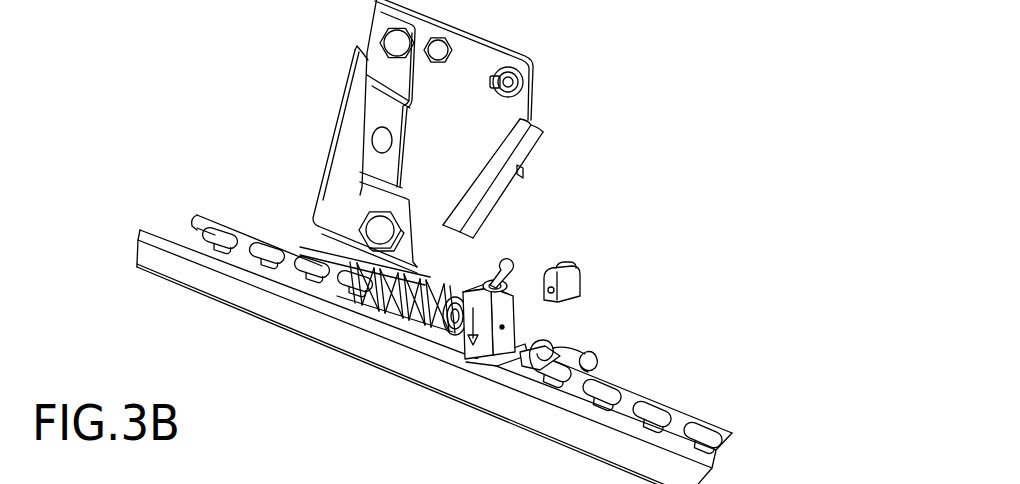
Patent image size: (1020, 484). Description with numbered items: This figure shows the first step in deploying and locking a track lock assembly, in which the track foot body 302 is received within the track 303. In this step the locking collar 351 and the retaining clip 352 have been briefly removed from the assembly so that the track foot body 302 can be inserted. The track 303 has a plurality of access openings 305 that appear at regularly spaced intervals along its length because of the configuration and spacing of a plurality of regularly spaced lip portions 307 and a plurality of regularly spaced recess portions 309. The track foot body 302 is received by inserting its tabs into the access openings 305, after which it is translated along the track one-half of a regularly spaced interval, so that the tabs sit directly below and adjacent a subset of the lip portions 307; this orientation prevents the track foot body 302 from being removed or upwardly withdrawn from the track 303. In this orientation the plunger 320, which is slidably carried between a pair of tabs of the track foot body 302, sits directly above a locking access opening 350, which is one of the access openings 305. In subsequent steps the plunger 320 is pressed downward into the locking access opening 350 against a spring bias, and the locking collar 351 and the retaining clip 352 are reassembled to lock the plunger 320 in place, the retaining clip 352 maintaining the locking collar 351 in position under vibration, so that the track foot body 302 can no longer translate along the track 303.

The track foot body 302 is at (357, 308).
The track 303 is at (157, 268).
The access openings 305 is at (235, 240).
The regularly spaced lip portions 307 is at (213, 230).
The regularly spaced recess portions 309 is at (252, 243).
The plunger 320 is at (478, 350).
The locking access opening 350 is at (467, 360).
The locking collar 351 is at (583, 282).
The retaining clip 352 is at (600, 363).